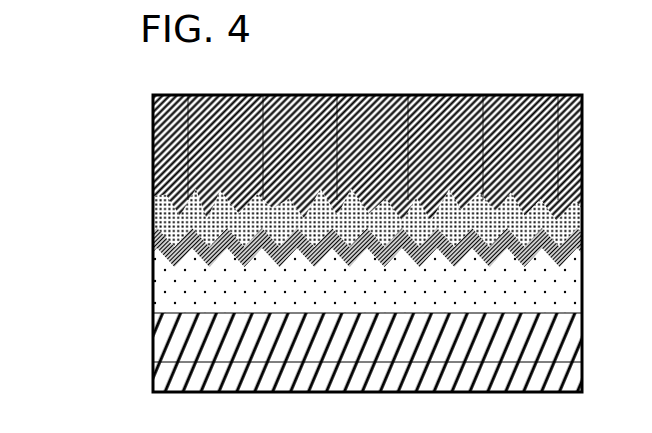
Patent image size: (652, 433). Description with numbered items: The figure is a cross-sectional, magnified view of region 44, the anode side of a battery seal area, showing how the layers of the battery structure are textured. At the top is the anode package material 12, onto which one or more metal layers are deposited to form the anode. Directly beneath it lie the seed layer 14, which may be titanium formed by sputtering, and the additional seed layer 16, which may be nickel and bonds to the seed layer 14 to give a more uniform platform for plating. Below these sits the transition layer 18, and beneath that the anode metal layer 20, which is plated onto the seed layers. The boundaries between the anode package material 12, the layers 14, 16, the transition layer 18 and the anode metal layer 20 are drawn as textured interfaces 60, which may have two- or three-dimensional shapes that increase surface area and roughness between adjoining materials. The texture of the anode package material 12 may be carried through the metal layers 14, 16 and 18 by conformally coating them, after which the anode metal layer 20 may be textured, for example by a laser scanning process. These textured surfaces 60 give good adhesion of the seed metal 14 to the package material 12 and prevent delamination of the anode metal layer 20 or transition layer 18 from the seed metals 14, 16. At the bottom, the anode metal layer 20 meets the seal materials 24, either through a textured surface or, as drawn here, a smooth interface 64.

The anode package material 12 is at (162, 143).
The seed layer 14 is at (296, 206).
The additional seed layer 16 is at (160, 212).
The transition layer 18 is at (154, 243).
The anode metal layer 20 is at (195, 273).
The seal materials 24 is at (200, 343).
The region 44 is at (516, 93).
The textured interfaces 60 is at (558, 258).
The smooth interface 64 is at (558, 316).